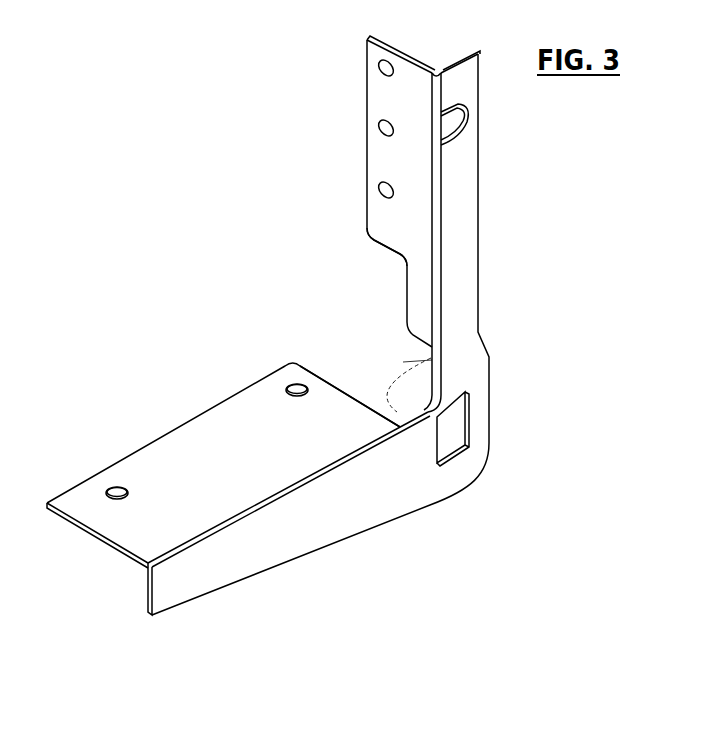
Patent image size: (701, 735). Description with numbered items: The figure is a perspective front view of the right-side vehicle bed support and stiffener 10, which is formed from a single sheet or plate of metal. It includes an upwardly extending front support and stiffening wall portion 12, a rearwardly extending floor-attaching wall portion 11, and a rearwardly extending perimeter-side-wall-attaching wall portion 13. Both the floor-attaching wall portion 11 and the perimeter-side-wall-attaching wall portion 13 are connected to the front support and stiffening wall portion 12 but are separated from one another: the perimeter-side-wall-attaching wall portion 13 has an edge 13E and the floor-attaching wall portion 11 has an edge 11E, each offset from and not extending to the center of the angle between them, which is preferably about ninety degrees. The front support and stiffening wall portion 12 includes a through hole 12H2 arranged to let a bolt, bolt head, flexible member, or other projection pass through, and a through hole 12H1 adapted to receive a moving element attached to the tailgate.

The right-side vehicle bed support and stiffener 10 is at (232, 223).
The rearwardly extending floor-attaching wall portion 11 is at (160, 450).
The edge 11E is at (320, 370).
The upwardly extending front support and stiffening wall portion 12 is at (170, 595).
The through hole 12H1 is at (453, 422).
The through hole 12H2 is at (457, 118).
The rearwardly extending perimeter-side-wall-attaching wall portion 13 is at (395, 167).
The edge 13E is at (398, 267).